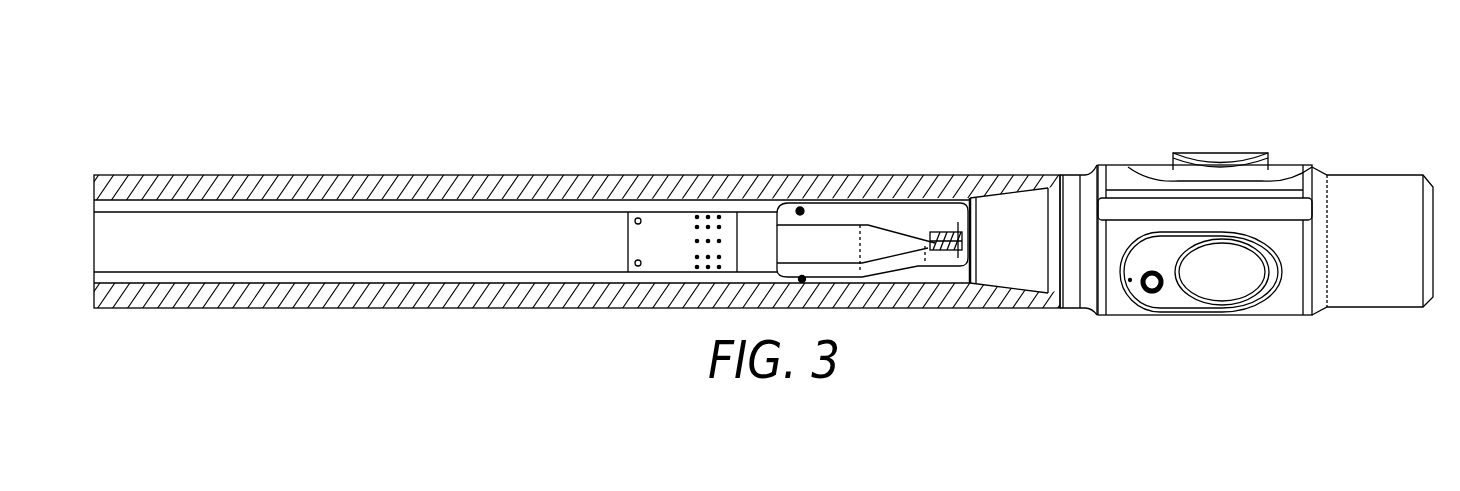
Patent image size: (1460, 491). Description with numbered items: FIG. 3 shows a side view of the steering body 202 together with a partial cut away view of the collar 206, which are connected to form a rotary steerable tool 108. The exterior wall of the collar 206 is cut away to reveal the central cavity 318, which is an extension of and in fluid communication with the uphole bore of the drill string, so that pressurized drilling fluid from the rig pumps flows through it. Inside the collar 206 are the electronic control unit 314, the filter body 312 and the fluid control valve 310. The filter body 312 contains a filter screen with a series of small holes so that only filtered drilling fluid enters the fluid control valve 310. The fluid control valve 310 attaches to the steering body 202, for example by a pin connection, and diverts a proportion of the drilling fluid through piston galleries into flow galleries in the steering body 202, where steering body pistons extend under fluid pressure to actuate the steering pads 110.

The downhole tool 108 is at (529, 71).
The collar 206 is at (381, 186).
The central cavity 318 is at (245, 207).
The electronic control unit 314 is at (548, 208).
The filter body 312 is at (685, 208).
The fluid control valve 310 is at (922, 208).
The steering pads 110 is at (1221, 155).
The steering body 202 is at (1375, 313).